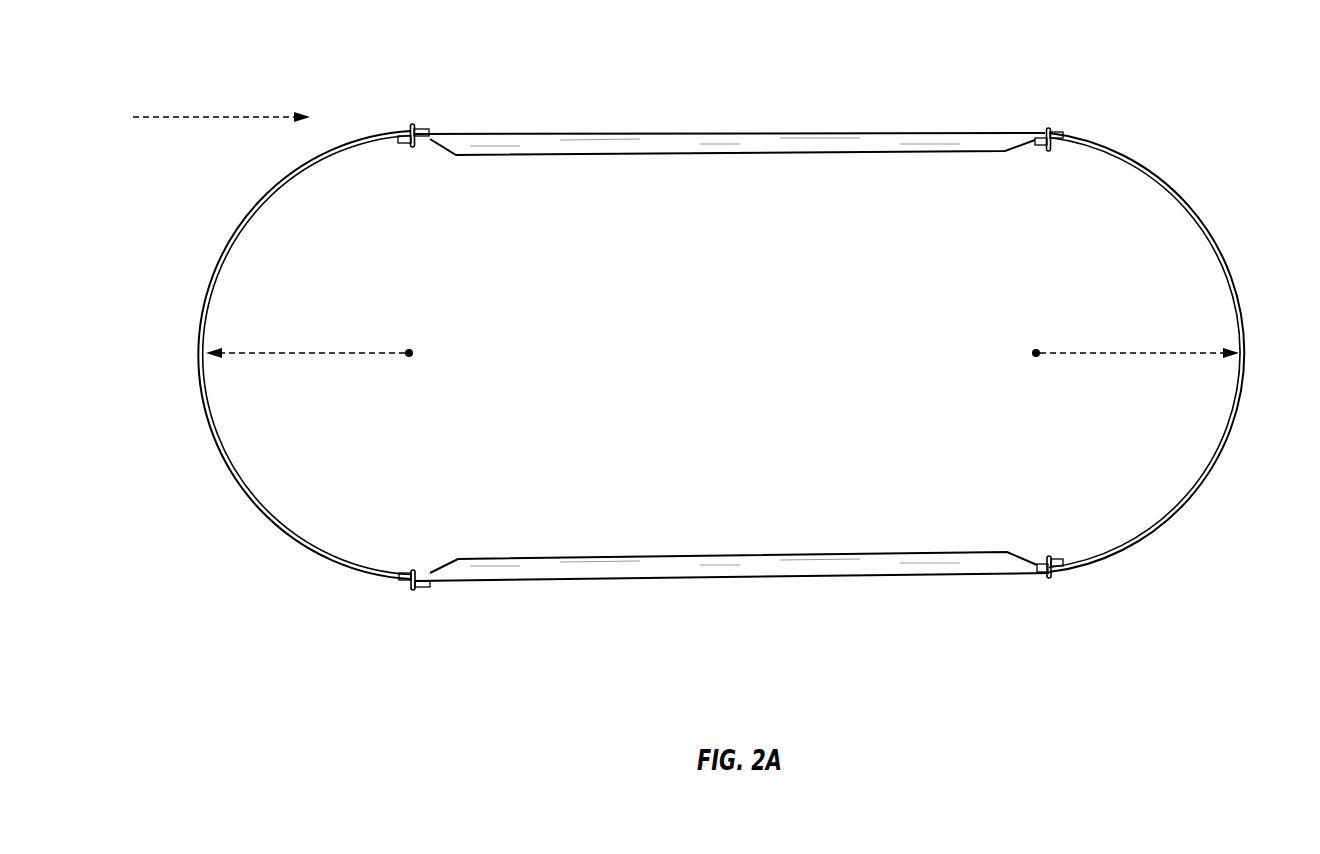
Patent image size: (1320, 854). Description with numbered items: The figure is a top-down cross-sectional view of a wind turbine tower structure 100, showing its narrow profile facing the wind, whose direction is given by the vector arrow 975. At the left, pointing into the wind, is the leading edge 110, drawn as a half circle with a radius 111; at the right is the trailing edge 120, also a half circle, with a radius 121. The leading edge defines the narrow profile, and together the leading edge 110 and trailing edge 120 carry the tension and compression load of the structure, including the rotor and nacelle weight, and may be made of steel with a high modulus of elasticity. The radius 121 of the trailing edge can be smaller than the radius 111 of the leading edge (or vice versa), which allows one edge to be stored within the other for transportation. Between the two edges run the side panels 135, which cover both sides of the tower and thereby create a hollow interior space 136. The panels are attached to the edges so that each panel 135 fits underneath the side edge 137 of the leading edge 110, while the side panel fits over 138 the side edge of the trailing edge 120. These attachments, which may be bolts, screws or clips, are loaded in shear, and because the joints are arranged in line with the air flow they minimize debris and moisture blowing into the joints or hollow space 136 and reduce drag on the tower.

The stent-graft / medical device 100 is at (724, 356).
The leading edge 110 is at (216, 265).
The radius of the leading edge 111 is at (265, 353).
The trailing edge 120 is at (1233, 265).
The radius of the trailing edge 121 is at (1181, 353).
The side panels 135 is at (512, 133).
The hollow interior space 136 is at (1043, 492).
The side edge of the leading edge 137 is at (413, 124).
The side panel fitting over the side edge of the trailing edge 138 is at (1050, 128).
The wind direction vector arrow 975 is at (214, 117).